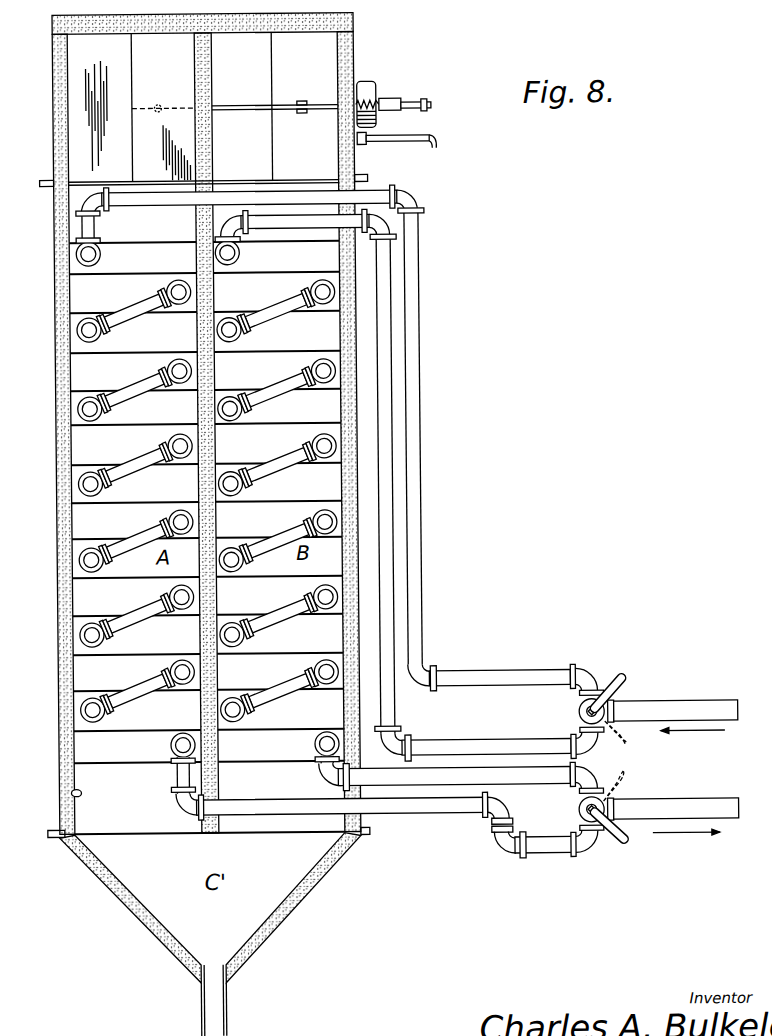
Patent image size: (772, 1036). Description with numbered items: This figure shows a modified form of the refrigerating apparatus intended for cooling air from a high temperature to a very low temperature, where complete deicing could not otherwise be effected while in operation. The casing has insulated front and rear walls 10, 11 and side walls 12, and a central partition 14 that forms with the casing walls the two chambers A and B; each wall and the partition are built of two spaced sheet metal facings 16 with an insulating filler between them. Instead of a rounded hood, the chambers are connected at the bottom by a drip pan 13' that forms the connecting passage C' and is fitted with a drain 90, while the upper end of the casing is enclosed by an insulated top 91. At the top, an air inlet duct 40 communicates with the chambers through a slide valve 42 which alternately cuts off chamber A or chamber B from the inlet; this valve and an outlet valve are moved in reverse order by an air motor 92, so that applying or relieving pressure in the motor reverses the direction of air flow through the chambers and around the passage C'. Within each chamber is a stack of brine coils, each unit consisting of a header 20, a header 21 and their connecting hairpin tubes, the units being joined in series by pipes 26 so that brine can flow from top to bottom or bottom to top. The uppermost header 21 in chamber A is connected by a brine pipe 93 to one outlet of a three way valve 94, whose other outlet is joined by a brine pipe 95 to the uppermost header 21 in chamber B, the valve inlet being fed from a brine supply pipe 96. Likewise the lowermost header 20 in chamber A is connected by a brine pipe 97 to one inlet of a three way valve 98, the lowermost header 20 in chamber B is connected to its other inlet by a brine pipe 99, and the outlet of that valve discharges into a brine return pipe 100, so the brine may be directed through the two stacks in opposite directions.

The front wall 10 is at (52, 631).
The rear wall 11 is at (352, 527).
The side walls 12 is at (209, 798).
The drip pan 13' is at (211, 908).
The central partition 14 is at (211, 293).
The sheet metal facings 16 is at (66, 796).
The header 20 is at (207, 499).
The header 21 is at (206, 502).
The pipes 26 is at (128, 318).
The air inlet duct 40 is at (274, 106).
The slide valve 42 is at (140, 107).
The drain 90 is at (219, 1012).
The insulated top 91 is at (330, 19).
The air motor 92 is at (376, 91).
The brine pipe 93 is at (417, 345).
The three way valve 94 is at (619, 686).
The brine pipe 95 is at (459, 742).
The brine supply pipe 96 is at (705, 705).
The brine pipe 97 is at (416, 816).
The three way valve 98 is at (614, 850).
The brine pipe 99 is at (520, 787).
The brine return pipe 100 is at (727, 824).